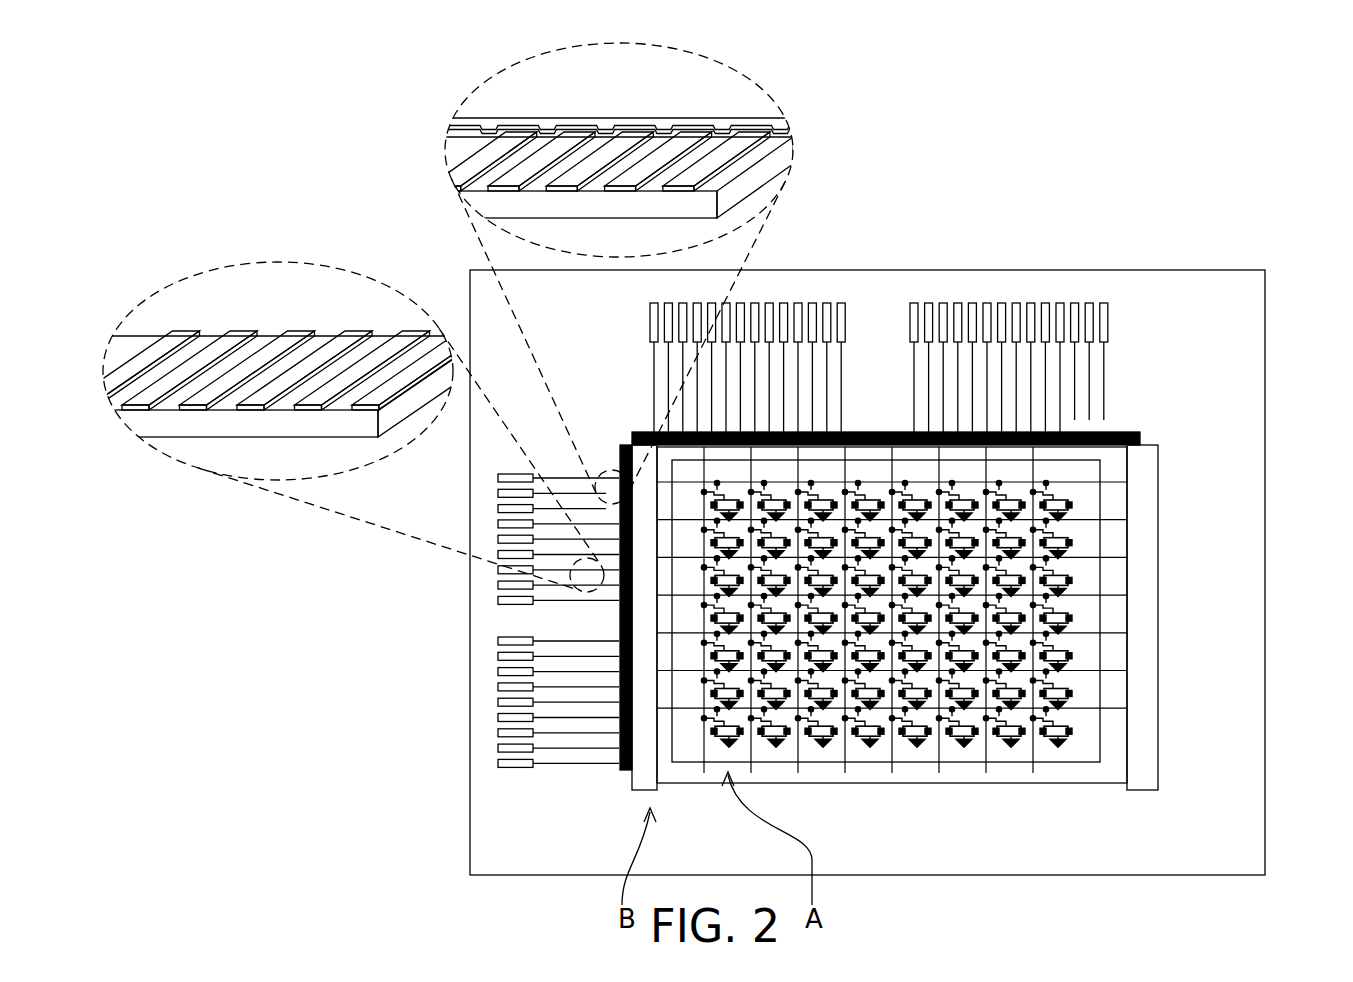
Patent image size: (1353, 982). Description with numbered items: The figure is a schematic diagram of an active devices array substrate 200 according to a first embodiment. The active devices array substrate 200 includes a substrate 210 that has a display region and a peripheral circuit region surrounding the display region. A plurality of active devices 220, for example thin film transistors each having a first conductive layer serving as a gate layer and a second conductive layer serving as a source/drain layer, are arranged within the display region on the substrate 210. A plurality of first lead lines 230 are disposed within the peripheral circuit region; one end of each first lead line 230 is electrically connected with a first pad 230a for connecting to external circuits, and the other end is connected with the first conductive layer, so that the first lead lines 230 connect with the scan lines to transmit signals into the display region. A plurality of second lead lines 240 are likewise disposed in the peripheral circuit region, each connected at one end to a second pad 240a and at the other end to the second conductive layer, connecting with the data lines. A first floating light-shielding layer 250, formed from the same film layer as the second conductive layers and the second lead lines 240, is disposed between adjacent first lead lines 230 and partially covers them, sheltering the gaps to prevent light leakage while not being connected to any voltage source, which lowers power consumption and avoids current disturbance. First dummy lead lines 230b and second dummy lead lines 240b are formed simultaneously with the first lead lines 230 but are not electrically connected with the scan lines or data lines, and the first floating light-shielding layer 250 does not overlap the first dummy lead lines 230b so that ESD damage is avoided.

The active devices array substrate 200 is at (1335, 915).
The substrate 210 is at (222, 425).
The active devices 220 is at (1064, 707).
The first lead lines 230 is at (474, 488).
The first pad 230a is at (513, 775).
The first dummy lead lines 230b is at (567, 477).
The second lead lines 240 is at (941, 305).
The second pad 240a is at (912, 300).
The second dummy lead lines 240b is at (1100, 372).
The first floating light-shielding layer 250 is at (402, 337).